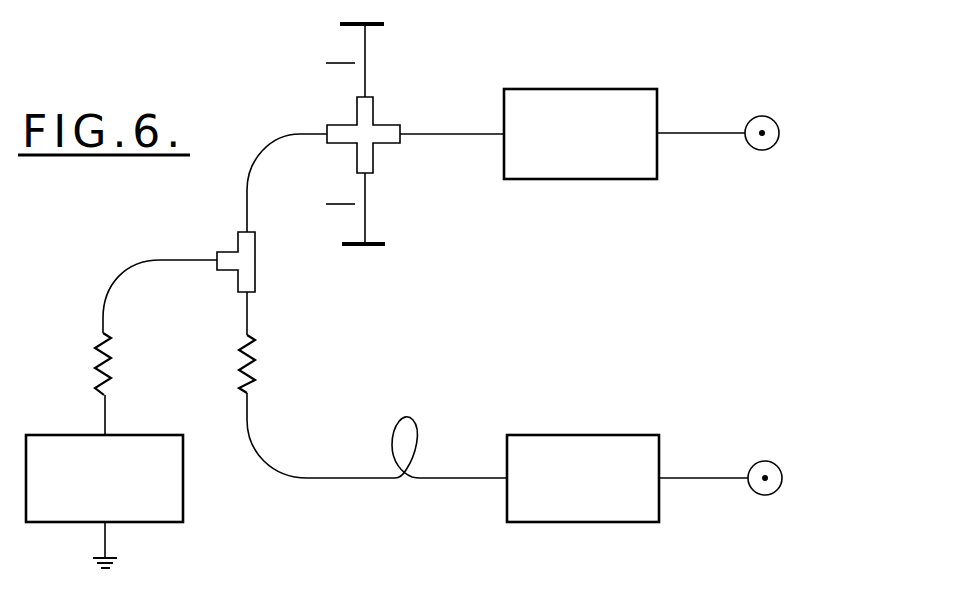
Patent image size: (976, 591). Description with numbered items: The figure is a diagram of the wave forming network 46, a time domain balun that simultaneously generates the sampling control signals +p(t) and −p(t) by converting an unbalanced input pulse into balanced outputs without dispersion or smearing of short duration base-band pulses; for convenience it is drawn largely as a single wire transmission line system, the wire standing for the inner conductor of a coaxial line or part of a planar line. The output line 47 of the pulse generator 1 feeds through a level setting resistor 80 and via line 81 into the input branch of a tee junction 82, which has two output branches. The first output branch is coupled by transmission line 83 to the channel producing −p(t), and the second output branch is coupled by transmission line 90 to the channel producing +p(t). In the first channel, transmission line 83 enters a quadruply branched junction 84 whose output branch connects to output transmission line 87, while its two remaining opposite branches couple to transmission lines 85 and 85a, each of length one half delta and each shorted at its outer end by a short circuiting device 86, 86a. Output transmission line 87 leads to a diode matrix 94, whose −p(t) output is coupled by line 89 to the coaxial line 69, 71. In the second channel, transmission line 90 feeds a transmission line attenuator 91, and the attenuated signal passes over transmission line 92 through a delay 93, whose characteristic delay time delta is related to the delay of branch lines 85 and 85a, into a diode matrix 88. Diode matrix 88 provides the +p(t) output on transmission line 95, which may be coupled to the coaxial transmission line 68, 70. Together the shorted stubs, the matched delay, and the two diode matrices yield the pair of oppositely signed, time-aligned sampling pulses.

The pulse generator 1 is at (183, 477).
The wave forming network 46 is at (562, 309).
The output line 47 is at (105, 418).
The level setting resistor 80 is at (95, 357).
The line 81 is at (200, 260).
The tee junction 82 is at (255, 262).
The transmission line 83 is at (307, 134).
The quadruply branched junction 84 is at (373, 112).
The transmission line 85 is at (365, 53).
The transmission line 85a is at (365, 194).
The short circuiting device 86 is at (342, 24).
The short circuiting device 86a is at (385, 244).
The output transmission line 87 is at (483, 134).
The diode matrix 88 is at (582, 435).
The line 89 is at (717, 133).
The transmission line 90 is at (247, 316).
The transmission line attenuator 91 is at (256, 375).
The transmission line 92 is at (336, 478).
The delay 93 is at (405, 474).
The diode matrix 94 is at (604, 89).
The transmission line 95 is at (729, 478).
The coaxial line 69 is at (785, 153).
The coaxial line 71 is at (764, 150).
The coaxial transmission line 68 is at (790, 498).
The coaxial transmission line 70 is at (767, 495).